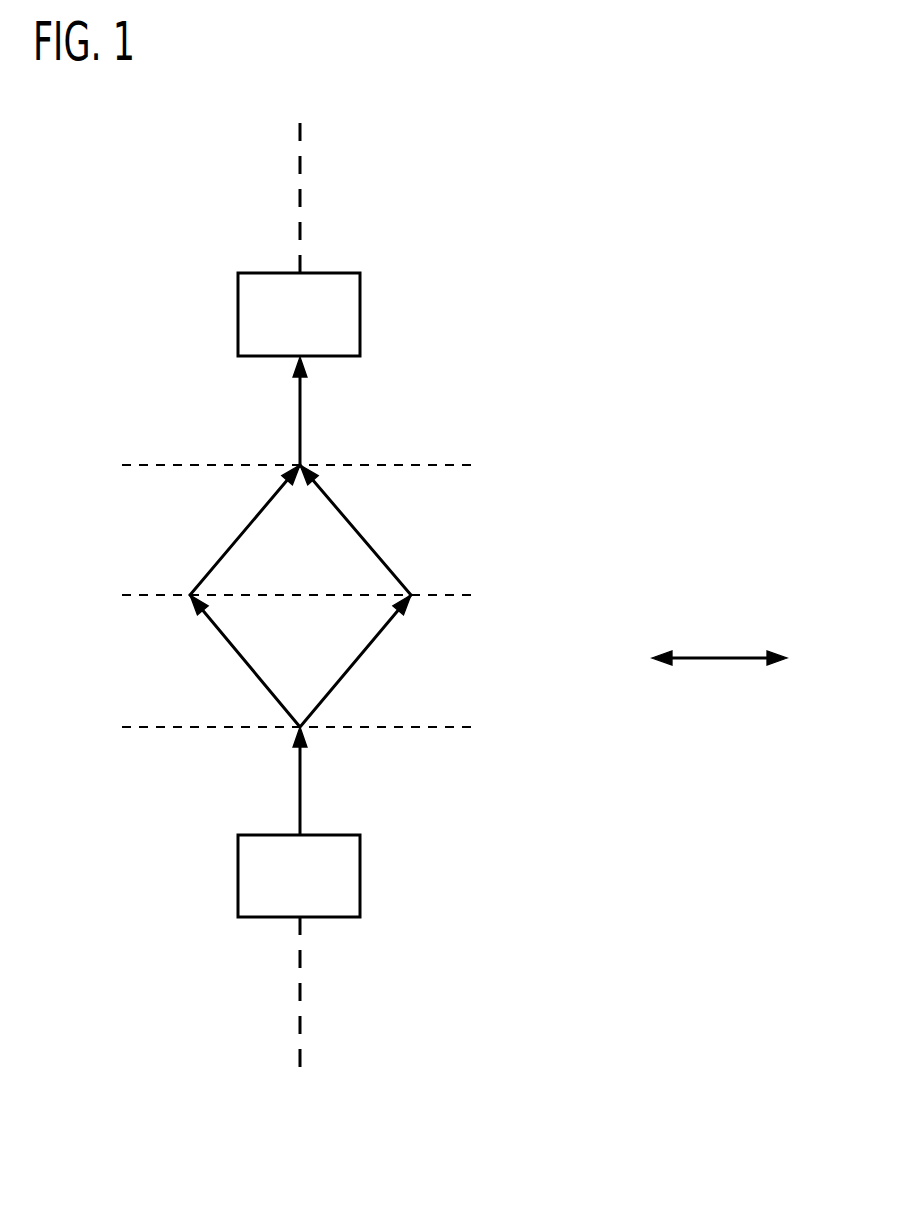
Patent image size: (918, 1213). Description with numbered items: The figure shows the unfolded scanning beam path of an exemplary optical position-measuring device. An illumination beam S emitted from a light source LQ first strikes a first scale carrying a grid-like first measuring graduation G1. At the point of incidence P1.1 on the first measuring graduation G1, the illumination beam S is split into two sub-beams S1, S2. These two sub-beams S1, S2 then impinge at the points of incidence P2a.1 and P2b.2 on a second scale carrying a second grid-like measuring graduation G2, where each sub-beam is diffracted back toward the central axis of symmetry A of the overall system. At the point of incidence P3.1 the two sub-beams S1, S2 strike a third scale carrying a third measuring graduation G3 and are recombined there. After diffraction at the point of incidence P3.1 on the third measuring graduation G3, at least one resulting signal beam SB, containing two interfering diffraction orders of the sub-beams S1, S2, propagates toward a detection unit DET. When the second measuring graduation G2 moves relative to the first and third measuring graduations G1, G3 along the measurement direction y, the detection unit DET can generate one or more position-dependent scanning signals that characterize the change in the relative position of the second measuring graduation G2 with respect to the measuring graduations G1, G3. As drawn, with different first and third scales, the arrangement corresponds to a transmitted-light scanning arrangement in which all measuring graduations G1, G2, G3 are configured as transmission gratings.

The central axis of symmetry A is at (303, 167).
The detection unit DET is at (345, 316).
The light source LQ is at (345, 880).
The signal beam SB is at (303, 413).
The illumination beam S is at (297, 793).
The first sub-beam S1 is at (225, 644).
The second sub-beam S2 is at (375, 644).
The first measuring graduation G1 is at (458, 728).
The second measuring graduation G2 is at (458, 598).
The third measuring graduation G3 is at (458, 463).
The point of incidence on the first measuring graduation P1.1 is at (297, 722).
The point of incidence of the first sub-beam on the second measuring graduation P2a.1 is at (186, 594).
The point of incidence of the second sub-beam on the second measuring graduation P2b.2 is at (410, 592).
The point of incidence on the third measuring graduation P3.1 is at (297, 462).
The measurement direction y is at (719, 674).